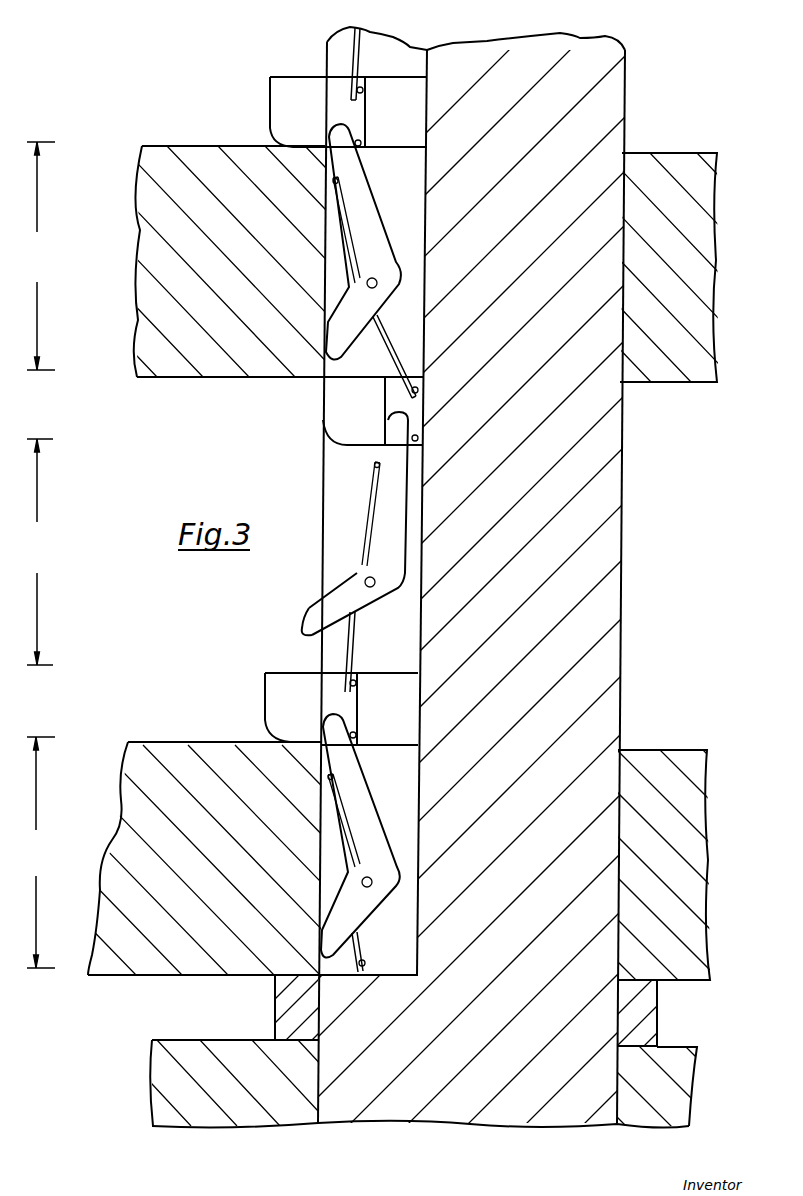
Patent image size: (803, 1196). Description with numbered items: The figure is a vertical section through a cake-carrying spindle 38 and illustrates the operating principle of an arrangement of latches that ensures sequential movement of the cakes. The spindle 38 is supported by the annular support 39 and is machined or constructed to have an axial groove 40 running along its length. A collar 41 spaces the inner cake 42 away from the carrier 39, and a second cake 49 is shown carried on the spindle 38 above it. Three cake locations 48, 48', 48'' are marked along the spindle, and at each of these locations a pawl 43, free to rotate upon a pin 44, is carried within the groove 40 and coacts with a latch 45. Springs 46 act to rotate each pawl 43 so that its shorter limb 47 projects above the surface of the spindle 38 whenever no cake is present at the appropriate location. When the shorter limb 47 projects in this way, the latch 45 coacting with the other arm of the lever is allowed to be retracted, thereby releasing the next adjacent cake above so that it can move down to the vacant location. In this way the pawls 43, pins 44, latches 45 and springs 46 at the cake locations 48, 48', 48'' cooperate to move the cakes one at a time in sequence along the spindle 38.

The spindle 38 is at (613, 90).
The annular support 39 is at (163, 1052).
The axial groove 40 is at (390, 48).
The collar 41 is at (652, 1012).
The inner cake 42 is at (140, 825).
The pawl 43 is at (380, 508).
The pin 44 is at (364, 583).
The latch 45 is at (338, 405).
The spring 46 is at (360, 523).
The shorter limb 47 is at (305, 617).
The cake location 48 is at (38, 852).
The cake location 48' is at (41, 552).
The cake location 48'' is at (43, 256).
The second cake 49 is at (187, 160).